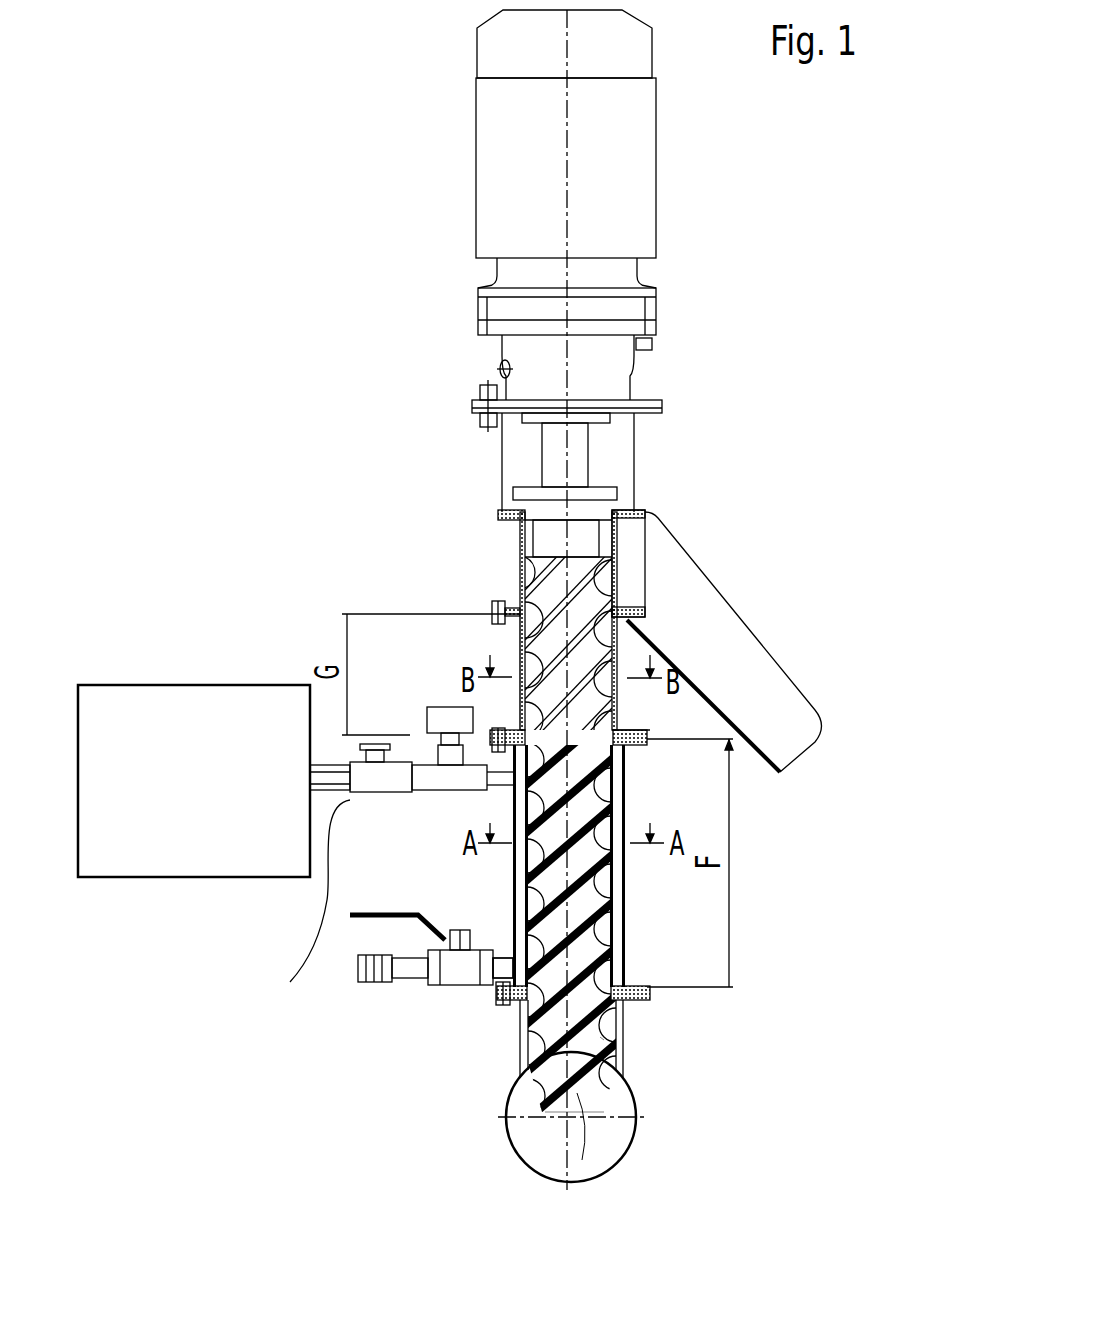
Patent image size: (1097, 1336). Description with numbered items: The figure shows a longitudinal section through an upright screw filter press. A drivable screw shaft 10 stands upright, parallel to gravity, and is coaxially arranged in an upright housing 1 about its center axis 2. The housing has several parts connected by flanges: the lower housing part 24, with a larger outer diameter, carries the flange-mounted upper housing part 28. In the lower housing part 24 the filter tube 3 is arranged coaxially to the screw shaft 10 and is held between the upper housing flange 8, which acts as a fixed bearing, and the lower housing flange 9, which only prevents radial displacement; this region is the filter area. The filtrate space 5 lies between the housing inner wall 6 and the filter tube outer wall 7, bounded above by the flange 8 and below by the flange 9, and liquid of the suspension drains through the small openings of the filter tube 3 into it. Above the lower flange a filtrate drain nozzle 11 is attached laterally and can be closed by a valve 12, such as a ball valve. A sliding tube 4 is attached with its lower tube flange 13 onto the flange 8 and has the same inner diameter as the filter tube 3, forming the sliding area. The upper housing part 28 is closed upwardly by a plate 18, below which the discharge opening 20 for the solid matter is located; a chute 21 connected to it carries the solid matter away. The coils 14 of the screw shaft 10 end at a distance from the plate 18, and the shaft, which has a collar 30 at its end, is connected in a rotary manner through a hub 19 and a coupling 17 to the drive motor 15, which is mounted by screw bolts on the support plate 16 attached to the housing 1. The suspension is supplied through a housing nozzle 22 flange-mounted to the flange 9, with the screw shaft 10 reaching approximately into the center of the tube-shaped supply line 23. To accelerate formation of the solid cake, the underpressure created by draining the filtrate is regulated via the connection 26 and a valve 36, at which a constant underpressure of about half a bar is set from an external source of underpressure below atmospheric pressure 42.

The housing 1 is at (520, 648).
The center axis 2 is at (570, 1058).
The filter tube 3 is at (632, 790).
The sliding tube 4 is at (617, 665).
The filtrate space 5 is at (622, 950).
The housing inner wall 6 is at (632, 918).
The filter tube outer wall 7 is at (615, 877).
The upper housing flange 8 is at (640, 745).
The lower housing flange 9 is at (650, 990).
The screw shaft 10 is at (600, 1037).
The filtrate drain nozzle 11 is at (488, 985).
The valve 12 is at (428, 970).
The lower tube flange 13 is at (640, 722).
The coils 14 is at (525, 935).
The drive motor 15 is at (490, 248).
The support plate 16 is at (470, 412).
The coupling 17 is at (523, 483).
The plate 18 is at (498, 512).
The hub 19 is at (580, 470).
The discharge opening 20 is at (632, 570).
The chute 21 is at (697, 592).
The housing nozzle 22 is at (520, 1023).
The supply line 23 is at (620, 1127).
The lower housing part 24 is at (510, 880).
The connection 26 is at (500, 790).
The upper housing part 28 is at (523, 587).
The collar 30 is at (603, 513).
The valve 36 is at (290, 982).
The source of underpressure below atmospheric pressure 42 is at (178, 684).